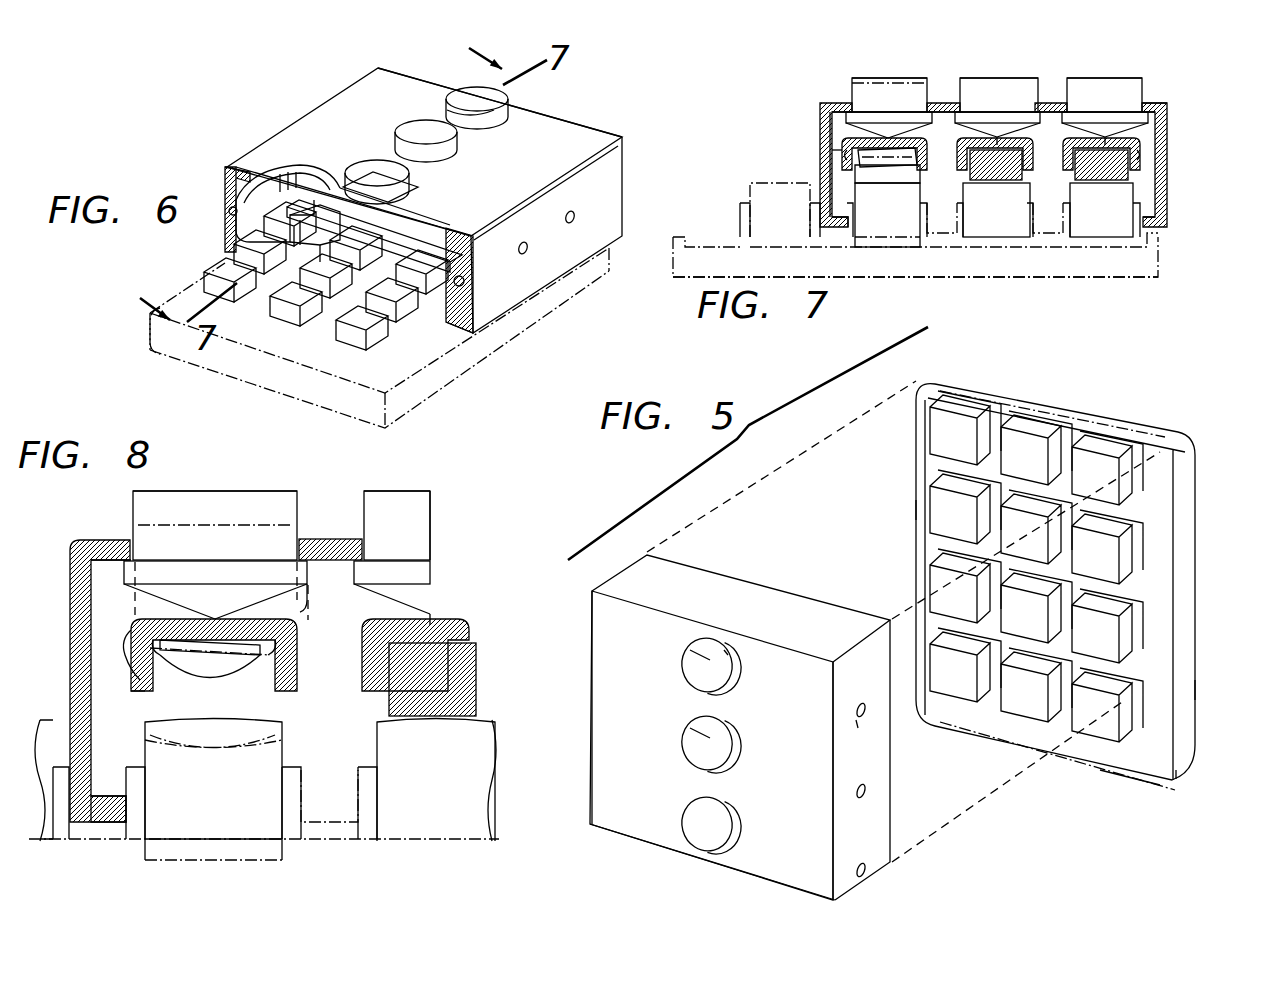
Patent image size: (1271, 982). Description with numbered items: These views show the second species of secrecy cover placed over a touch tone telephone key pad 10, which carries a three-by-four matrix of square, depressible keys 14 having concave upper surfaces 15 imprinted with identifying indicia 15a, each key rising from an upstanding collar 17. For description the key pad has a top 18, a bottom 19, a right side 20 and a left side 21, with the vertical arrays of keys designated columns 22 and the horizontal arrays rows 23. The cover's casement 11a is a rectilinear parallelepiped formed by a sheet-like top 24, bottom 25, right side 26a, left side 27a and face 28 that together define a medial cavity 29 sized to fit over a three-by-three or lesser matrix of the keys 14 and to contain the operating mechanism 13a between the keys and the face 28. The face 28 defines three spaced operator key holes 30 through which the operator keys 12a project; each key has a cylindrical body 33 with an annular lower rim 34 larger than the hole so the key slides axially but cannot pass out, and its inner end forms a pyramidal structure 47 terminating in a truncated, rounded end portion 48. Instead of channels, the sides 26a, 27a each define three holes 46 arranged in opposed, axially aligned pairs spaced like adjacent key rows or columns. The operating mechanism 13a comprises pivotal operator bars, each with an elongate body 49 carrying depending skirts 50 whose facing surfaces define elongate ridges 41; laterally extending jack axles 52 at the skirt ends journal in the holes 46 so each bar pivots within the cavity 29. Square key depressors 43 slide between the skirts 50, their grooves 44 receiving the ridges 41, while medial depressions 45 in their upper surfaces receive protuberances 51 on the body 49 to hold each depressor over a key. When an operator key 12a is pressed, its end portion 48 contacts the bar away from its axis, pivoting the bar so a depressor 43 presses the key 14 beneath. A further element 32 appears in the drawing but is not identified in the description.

In FIG. 6, the key pad 10 is at (149, 357).
In FIG. 7, the key pad 10 is at (1022, 277).
In FIG. 5, the key pad 10 is at (1176, 779).
In FIG. 6, the casement 11a is at (537, 285).
In FIG. 7, the casement 11a is at (822, 92).
In FIG. 8, the casement 11a is at (116, 539).
In FIG. 5, the casement 11a is at (692, 553).
In FIG. 6, the operator keys 12a is at (447, 113).
In FIG. 7, the operator keys 12a is at (1088, 75).
In FIG. 8, the operator keys 12a is at (349, 487).
In FIG. 5, the operator keys 12a is at (680, 803).
In FIG. 6, the operating mechanism 13a is at (411, 233).
In FIG. 7, the operating mechanism 13a is at (830, 143).
In FIG. 8, the operating mechanism 13a is at (126, 693).
In FIG. 6, the keys 14 is at (271, 290).
In FIG. 8, the keys 14 is at (183, 884).
In FIG. 5, the keys 14 is at (1130, 486).
In FIG. 7, the concave upper surfaces 15 is at (763, 183).
In FIG. 5, the concave upper surfaces 15 is at (940, 574).
In FIG. 5, the identifying indicia 15a is at (1087, 717).
In FIG. 6, the upstanding collars 17 is at (362, 333).
In FIG. 5, the upstanding collars 17 is at (1130, 691).
In FIG. 7, the top 18 is at (1158, 250).
In FIG. 5, the top 18 is at (1078, 384).
In FIG. 6, the bottom 19 is at (281, 374).
In FIG. 7, the bottom 19 is at (677, 260).
In FIG. 5, the bottom 19 is at (1121, 786).
In FIG. 6, the right side 20 is at (527, 328).
In FIG. 5, the right side 20 is at (1180, 691).
In FIG. 6, the left side 21 is at (182, 287).
In FIG. 5, the left side 21 is at (916, 498).
In FIG. 5, the columns 22 is at (947, 491).
In FIG. 5, the rows 23 is at (1104, 462).
In FIG. 6, the top 24 is at (438, 79).
In FIG. 5, the top 24 is at (826, 629).
In FIG. 7, the bottom 25 is at (830, 117).
In FIG. 5, the bottom 25 is at (683, 862).
In FIG. 6, the right side 26a is at (607, 194).
In FIG. 7, the right side 26a is at (1167, 198).
In FIG. 5, the right side 26a is at (869, 762).
In FIG. 6, the left side 27a is at (333, 95).
In FIG. 7, the left side 27a is at (830, 193).
In FIG. 8, the left side 27a is at (70, 647).
In FIG. 5, the left side 27a is at (588, 800).
In FIG. 6, the face 28 is at (541, 124).
In FIG. 7, the face 28 is at (828, 110).
In FIG. 8, the face 28 is at (331, 540).
In FIG. 5, the face 28 is at (650, 750).
In FIG. 7, the medial cavity 29 is at (1147, 177).
In FIG. 8, the medial cavity 29 is at (324, 801).
In FIG. 6, the operator key orifices 30 is at (462, 128).
In FIG. 7, the operator key orifices 30 is at (1147, 102).
In FIG. 8, the operator key orifices 30 is at (366, 540).
In FIG. 5, the operator key orifices 30 is at (738, 741).
In FIG. 6, the flange foot 32 is at (450, 329).
In FIG. 7, the flange foot 32 is at (833, 227).
In FIG. 8, the flange foot 32 is at (107, 819).
In FIG. 6, the cylindrical bodies 33 is at (376, 168).
In FIG. 7, the cylindrical bodies 33 is at (980, 93).
In FIG. 8, the cylindrical bodies 33 is at (246, 504).
In FIG. 5, the cylindrical bodies 33 is at (702, 729).
In FIG. 6, the lower rims 34 is at (388, 236).
In FIG. 7, the lower rims 34 is at (1090, 103).
In FIG. 8, the lower rims 34 is at (162, 575).
In FIG. 7, the elongate ridges 41 is at (847, 153).
In FIG. 8, the elongate ridges 41 is at (370, 690).
In FIG. 6, the key depressors 43 is at (310, 233).
In FIG. 7, the key depressors 43 is at (1023, 183).
In FIG. 8, the key depressors 43 is at (251, 708).
In FIG. 6, the grooves 44 is at (287, 233).
In FIG. 7, the grooves 44 is at (893, 153).
In FIG. 8, the grooves 44 is at (236, 659).
In FIG. 7, the medial depressions 45 is at (983, 170).
In FIG. 8, the medial depressions 45 is at (190, 655).
In FIG. 6, the holes 46 is at (570, 211).
In FIG. 5, the holes 46 is at (858, 864).
In FIG. 7, the pyramidal structure 47 is at (870, 127).
In FIG. 8, the pyramidal structure 47 is at (190, 601).
In FIG. 7, the truncated and rounded end portion 48 is at (885, 142).
In FIG. 8, the truncated and rounded end portion 48 is at (217, 617).
In FIG. 6, the elongate body 49 is at (271, 200).
In FIG. 7, the elongate body 49 is at (1120, 138).
In FIG. 8, the elongate body 49 is at (427, 598).
In FIG. 6, the skirts 50 is at (264, 225).
In FIG. 7, the skirts 50 is at (1037, 152).
In FIG. 8, the skirts 50 is at (345, 656).
In FIG. 7, the protuberances 51 is at (1055, 108).
In FIG. 8, the protuberances 51 is at (126, 628).
In FIG. 6, the jack axles 52 is at (233, 207).
In FIG. 5, the jack axles 52 is at (866, 862).